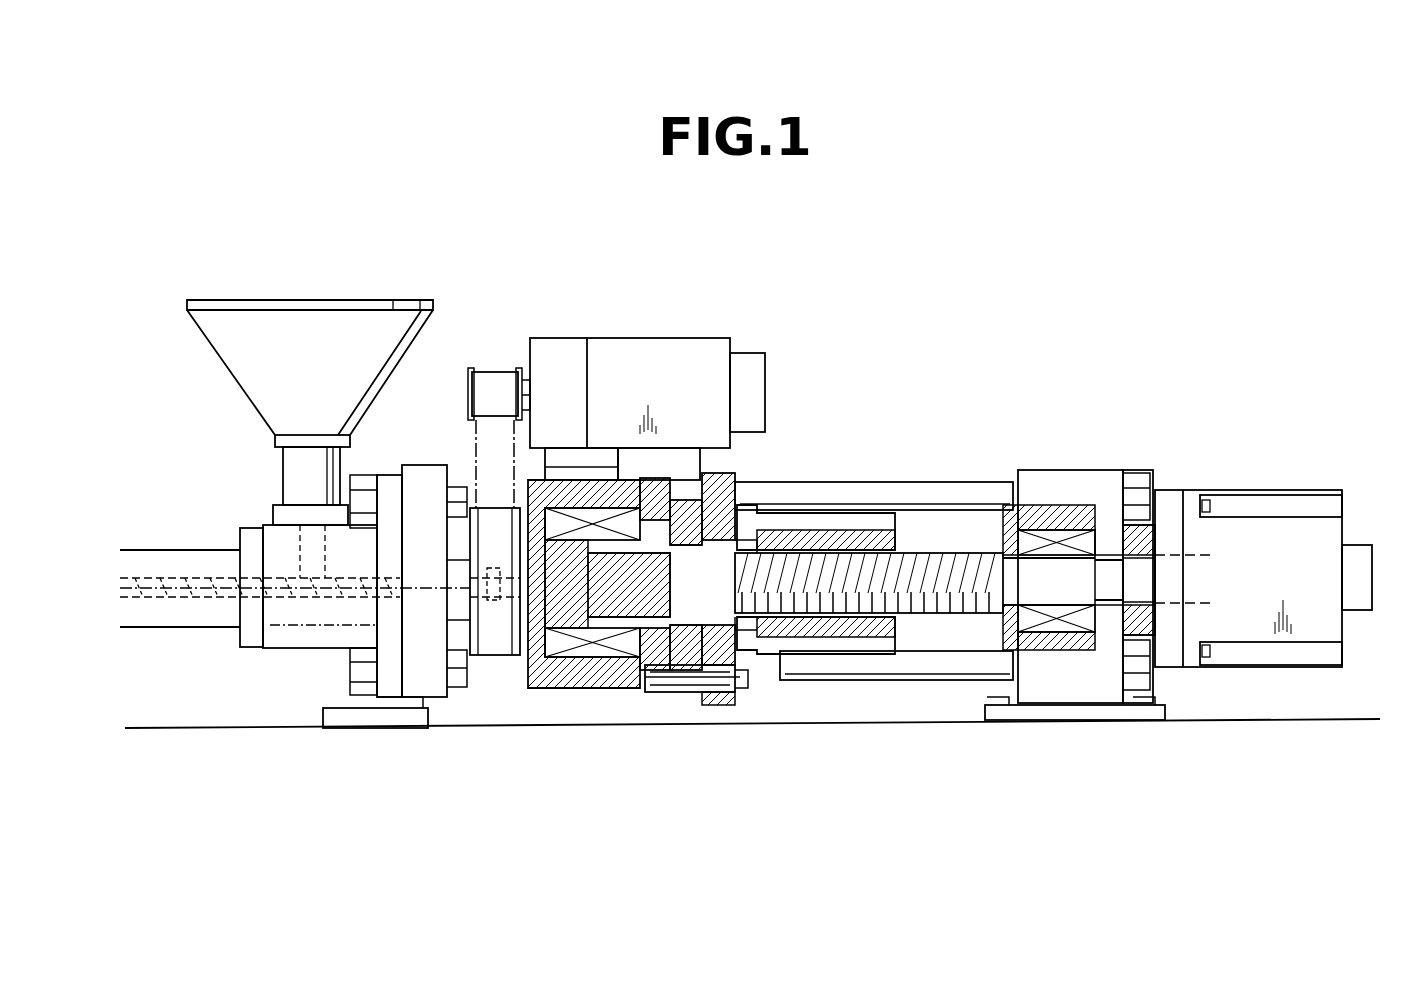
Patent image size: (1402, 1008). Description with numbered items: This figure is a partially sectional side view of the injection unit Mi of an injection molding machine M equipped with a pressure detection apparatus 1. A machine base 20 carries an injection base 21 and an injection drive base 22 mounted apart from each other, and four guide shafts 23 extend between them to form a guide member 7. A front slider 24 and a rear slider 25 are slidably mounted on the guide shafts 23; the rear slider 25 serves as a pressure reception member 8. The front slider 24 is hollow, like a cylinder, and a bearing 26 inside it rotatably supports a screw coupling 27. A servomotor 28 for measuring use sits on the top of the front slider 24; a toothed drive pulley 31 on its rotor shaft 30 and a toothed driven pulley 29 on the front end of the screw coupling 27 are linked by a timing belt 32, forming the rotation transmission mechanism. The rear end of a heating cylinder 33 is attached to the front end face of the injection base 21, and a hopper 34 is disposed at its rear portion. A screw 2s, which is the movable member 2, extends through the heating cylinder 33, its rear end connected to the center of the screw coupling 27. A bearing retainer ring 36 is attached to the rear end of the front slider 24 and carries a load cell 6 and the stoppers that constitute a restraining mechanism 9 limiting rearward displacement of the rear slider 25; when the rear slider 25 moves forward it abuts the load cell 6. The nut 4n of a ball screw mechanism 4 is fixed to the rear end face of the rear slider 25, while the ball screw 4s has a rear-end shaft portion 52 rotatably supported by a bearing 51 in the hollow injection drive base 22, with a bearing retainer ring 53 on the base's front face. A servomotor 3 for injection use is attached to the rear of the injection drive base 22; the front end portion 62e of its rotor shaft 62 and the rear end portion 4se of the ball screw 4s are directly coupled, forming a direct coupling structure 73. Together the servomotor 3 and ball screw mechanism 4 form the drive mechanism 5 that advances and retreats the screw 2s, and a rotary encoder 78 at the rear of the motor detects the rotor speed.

The pressure detection apparatus 1 is at (683, 706).
The movable member 2 is at (183, 602).
The screw 2s is at (158, 600).
The servomotor for injection use 3 is at (1262, 490).
The ball screw mechanism 4 is at (945, 588).
The nut 4n is at (847, 513).
The ball screw 4s is at (885, 618).
The rear end portion of the ball screw 4se is at (1137, 555).
The drive mechanism 5 is at (1302, 400).
The load cell 6 is at (652, 478).
The guide member 7 is at (908, 688).
The pressure reception member 8 is at (690, 500).
The restraining mechanism 9 is at (752, 696).
The machine base 20 is at (268, 722).
The injection base 21 is at (432, 708).
The injection drive base 22 is at (1072, 470).
The guide shafts 23 is at (790, 482).
The front slider 24 is at (593, 660).
The rear slider 25 is at (735, 478).
The bearing 26 is at (553, 690).
The screw coupling 27 is at (583, 545).
The servomotor for measuring use 28 is at (565, 340).
The toothed driven pulley 29 is at (447, 633).
The rotor shaft 30 is at (520, 370).
The toothed drive pulley 31 is at (462, 390).
The timing belt 32 is at (474, 444).
The heating cylinder 33 is at (145, 630).
The hopper 34 is at (210, 350).
The bearing retainer ring 36 is at (650, 678).
The bearing 51 is at (1048, 527).
The rear-end shaft portion 52 is at (1075, 605).
The bearing retainer ring 53 is at (1000, 527).
The rotor shaft 62 is at (1177, 605).
The front end portion of the rotor shaft 62e is at (1177, 605).
The direct coupling structure 73 is at (1150, 606).
The rotary encoder 78 is at (1358, 545).
The injection molding machine M is at (1208, 300).
The injection unit Mi is at (1072, 297).